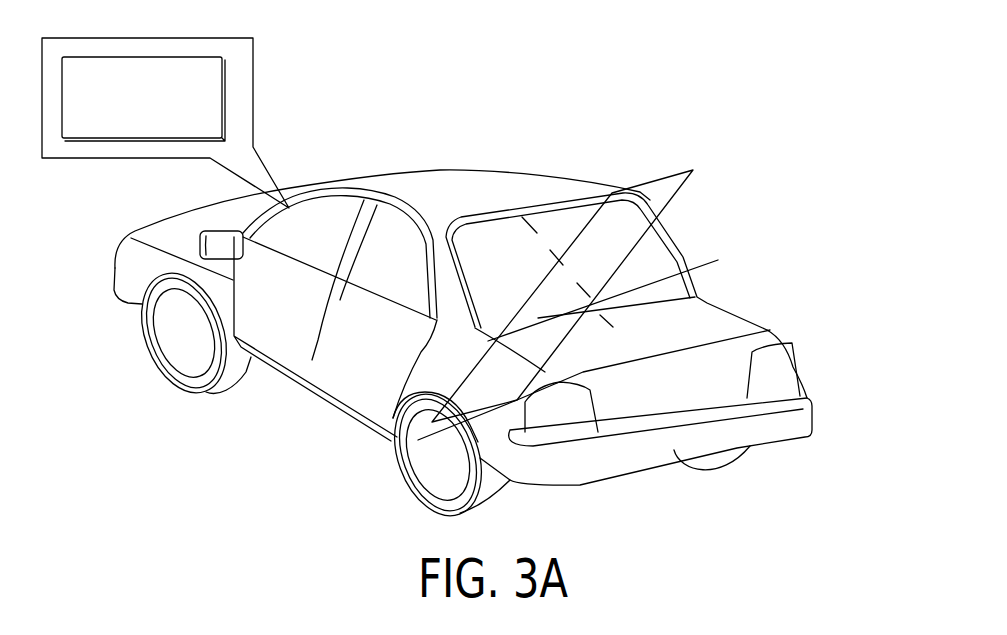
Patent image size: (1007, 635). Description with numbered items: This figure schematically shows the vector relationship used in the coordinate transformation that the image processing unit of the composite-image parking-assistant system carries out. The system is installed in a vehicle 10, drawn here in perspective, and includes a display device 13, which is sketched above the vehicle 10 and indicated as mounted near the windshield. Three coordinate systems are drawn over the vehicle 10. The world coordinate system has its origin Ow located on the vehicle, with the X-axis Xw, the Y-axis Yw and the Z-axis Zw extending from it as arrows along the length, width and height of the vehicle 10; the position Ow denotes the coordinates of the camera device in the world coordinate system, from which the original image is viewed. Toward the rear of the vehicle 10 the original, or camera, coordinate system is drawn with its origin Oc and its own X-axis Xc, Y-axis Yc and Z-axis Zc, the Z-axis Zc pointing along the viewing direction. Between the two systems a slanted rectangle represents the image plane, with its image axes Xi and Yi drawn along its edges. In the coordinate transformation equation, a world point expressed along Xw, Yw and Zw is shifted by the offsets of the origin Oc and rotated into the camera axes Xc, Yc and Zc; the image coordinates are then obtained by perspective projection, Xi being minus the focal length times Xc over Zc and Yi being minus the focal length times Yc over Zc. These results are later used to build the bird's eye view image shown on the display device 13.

The display device 13 is at (225, 105).
The vehicle 10 is at (528, 177).
The X-axis of the world coordinate system Xw is at (436, 320).
The Y-axis of the world coordinate system Yw is at (436, 320).
The Z-axis of the world coordinate system Zw is at (439, 320).
The world coordinate origin (camera position) Ow is at (456, 336).
The X-axis of the original (camera) coordinate system Xc is at (668, 393).
The Y-axis of the original (camera) coordinate system Yc is at (668, 393).
The Z-axis of the original (camera) coordinate system Zc is at (653, 377).
The origin of the original (camera) coordinate system Oc is at (643, 396).
The image coordinate X Xi is at (432, 422).
The image coordinate Y Yi is at (620, 349).